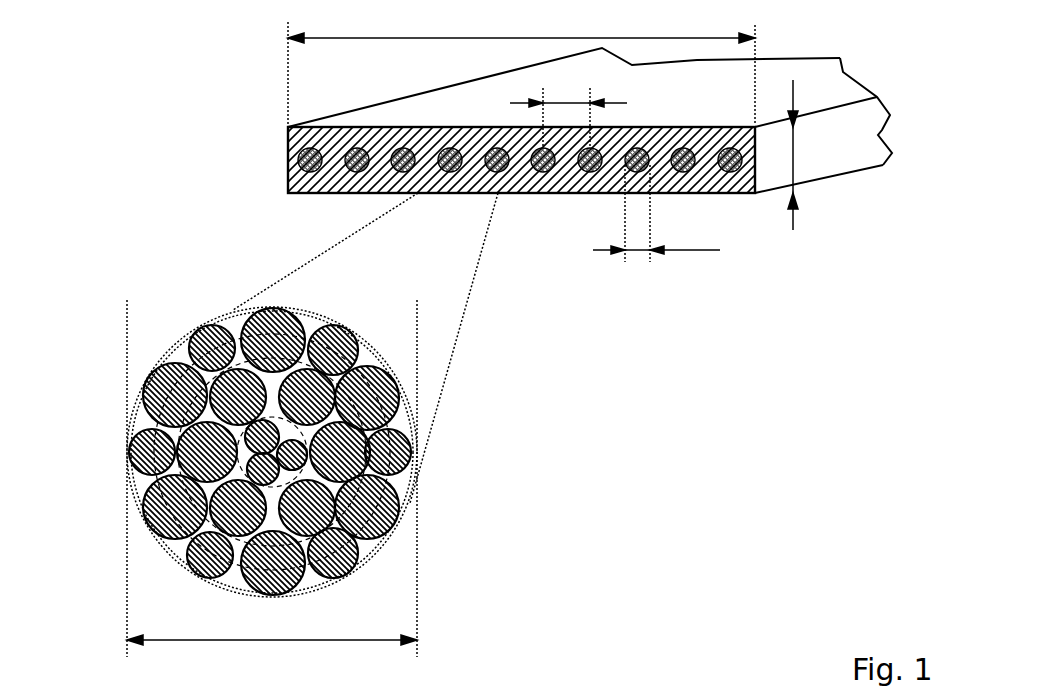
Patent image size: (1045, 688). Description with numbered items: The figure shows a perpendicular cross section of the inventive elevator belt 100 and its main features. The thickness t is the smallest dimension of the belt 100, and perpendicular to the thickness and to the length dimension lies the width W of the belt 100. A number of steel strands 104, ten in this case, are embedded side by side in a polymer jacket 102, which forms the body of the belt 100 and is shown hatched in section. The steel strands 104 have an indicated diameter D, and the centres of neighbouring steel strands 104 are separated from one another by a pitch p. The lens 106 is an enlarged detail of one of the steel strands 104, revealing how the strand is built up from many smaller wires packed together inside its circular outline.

The belt 100 is at (196, 126).
The polymer jacket 102 is at (527, 162).
The steel strands 104 is at (399, 151).
The lens 106 is at (395, 487).